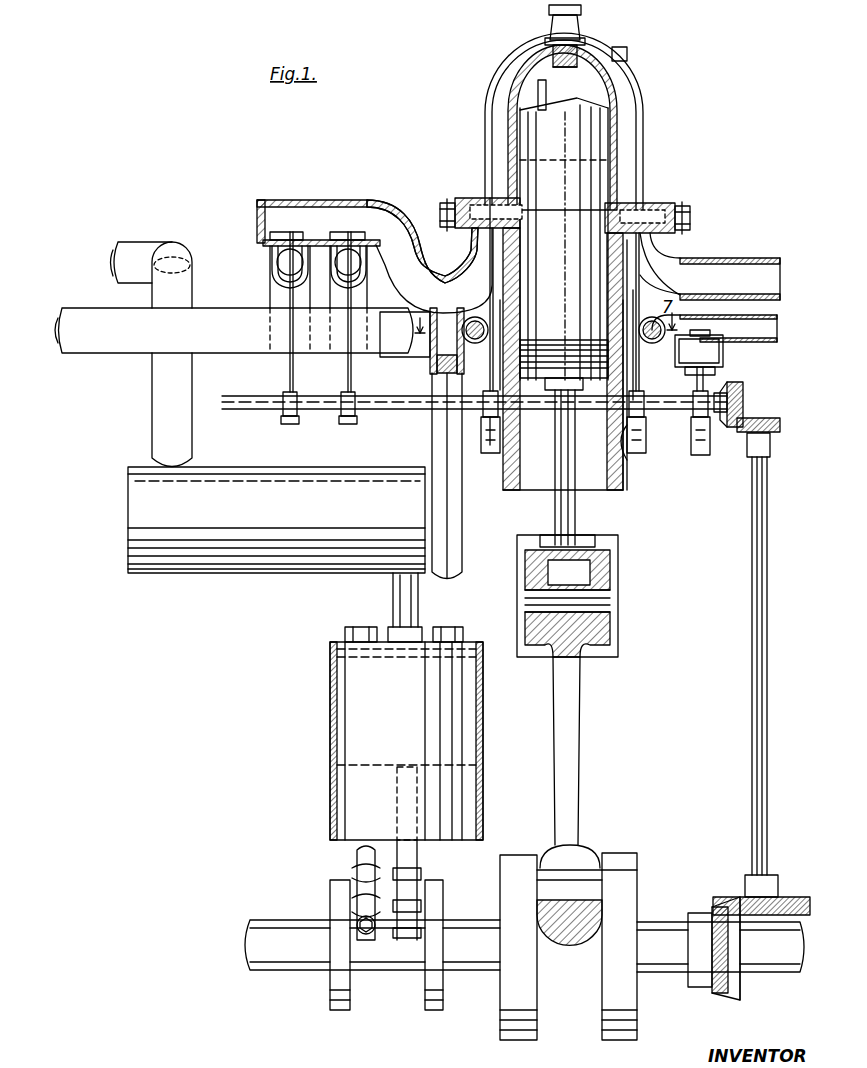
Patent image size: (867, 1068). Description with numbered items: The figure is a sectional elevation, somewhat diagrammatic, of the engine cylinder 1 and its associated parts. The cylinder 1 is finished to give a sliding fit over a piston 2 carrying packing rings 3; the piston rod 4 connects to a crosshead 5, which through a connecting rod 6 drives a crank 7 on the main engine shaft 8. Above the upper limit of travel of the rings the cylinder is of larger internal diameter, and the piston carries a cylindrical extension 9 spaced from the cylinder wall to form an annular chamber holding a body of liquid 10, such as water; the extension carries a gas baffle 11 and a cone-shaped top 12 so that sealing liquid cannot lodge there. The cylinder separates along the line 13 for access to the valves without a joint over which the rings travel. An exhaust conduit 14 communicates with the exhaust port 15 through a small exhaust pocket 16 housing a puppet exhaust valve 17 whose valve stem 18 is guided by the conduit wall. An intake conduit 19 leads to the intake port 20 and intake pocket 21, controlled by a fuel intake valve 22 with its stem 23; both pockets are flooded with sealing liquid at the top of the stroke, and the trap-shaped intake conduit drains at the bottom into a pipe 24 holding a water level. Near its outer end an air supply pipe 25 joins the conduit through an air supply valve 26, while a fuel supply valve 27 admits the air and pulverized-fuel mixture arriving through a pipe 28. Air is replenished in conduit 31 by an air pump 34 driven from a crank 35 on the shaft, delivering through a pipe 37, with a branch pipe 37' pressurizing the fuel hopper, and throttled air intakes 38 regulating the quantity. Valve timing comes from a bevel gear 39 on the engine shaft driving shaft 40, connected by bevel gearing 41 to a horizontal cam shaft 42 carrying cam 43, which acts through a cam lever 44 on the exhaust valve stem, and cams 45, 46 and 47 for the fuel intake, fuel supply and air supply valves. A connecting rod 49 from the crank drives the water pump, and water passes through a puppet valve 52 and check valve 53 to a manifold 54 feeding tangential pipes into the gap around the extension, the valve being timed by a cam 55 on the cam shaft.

The engine cylinder 1 is at (620, 485).
The piston 2 is at (612, 365).
The packing rings 3 is at (556, 362).
The piston rod 4 is at (577, 511).
The crosshead 5 is at (618, 548).
The connecting rod 6 is at (580, 732).
The crank 7 is at (622, 880).
The main engine shaft 8 is at (668, 962).
The cylindrical extension 9 is at (600, 175).
The body of liquid 10 is at (622, 195).
The gas baffle 11 is at (538, 84).
The cone-shaped top 12 is at (554, 110).
The separation line 13 is at (440, 217).
The exhaust conduit 14 is at (735, 272).
The exhaust port 15 is at (590, 220).
The exhaust pocket 16 is at (660, 210).
The exhaust valve 17 is at (660, 245).
The valve stem 18 is at (640, 265).
The intake conduit 19 is at (445, 275).
The intake port 20 is at (522, 210).
The intake pocket 21 is at (470, 200).
The fuel intake valve 22 is at (487, 198).
The valve stem 23 is at (485, 280).
The pipe 24 is at (432, 430).
The air supply pipe 25 is at (270, 290).
The air supply valve 26 is at (288, 232).
The fuel supply valve 27 is at (352, 236).
The pipe 28 is at (377, 300).
The conduit 31 is at (254, 345).
The air pump 34 is at (350, 722).
The crank 35 is at (282, 555).
The pipe 37 is at (155, 410).
The branch pipe 37' is at (152, 257).
The air intakes 38 is at (355, 627).
The bevel gear 39 is at (730, 985).
The shaft 40 is at (750, 731).
The bevel gearing 41 is at (745, 425).
The cam shaft 42 is at (682, 410).
The cam 43 is at (646, 425).
The cam lever 44 is at (640, 455).
The cam 45 is at (470, 430).
The cam 46 is at (347, 424).
The cam 47 is at (283, 414).
The connecting rod 49 is at (357, 853).
The puppet valve 52 is at (723, 352).
The check valve 53 is at (690, 375).
The manifold 54 is at (476, 343).
The cam 55 is at (708, 420).